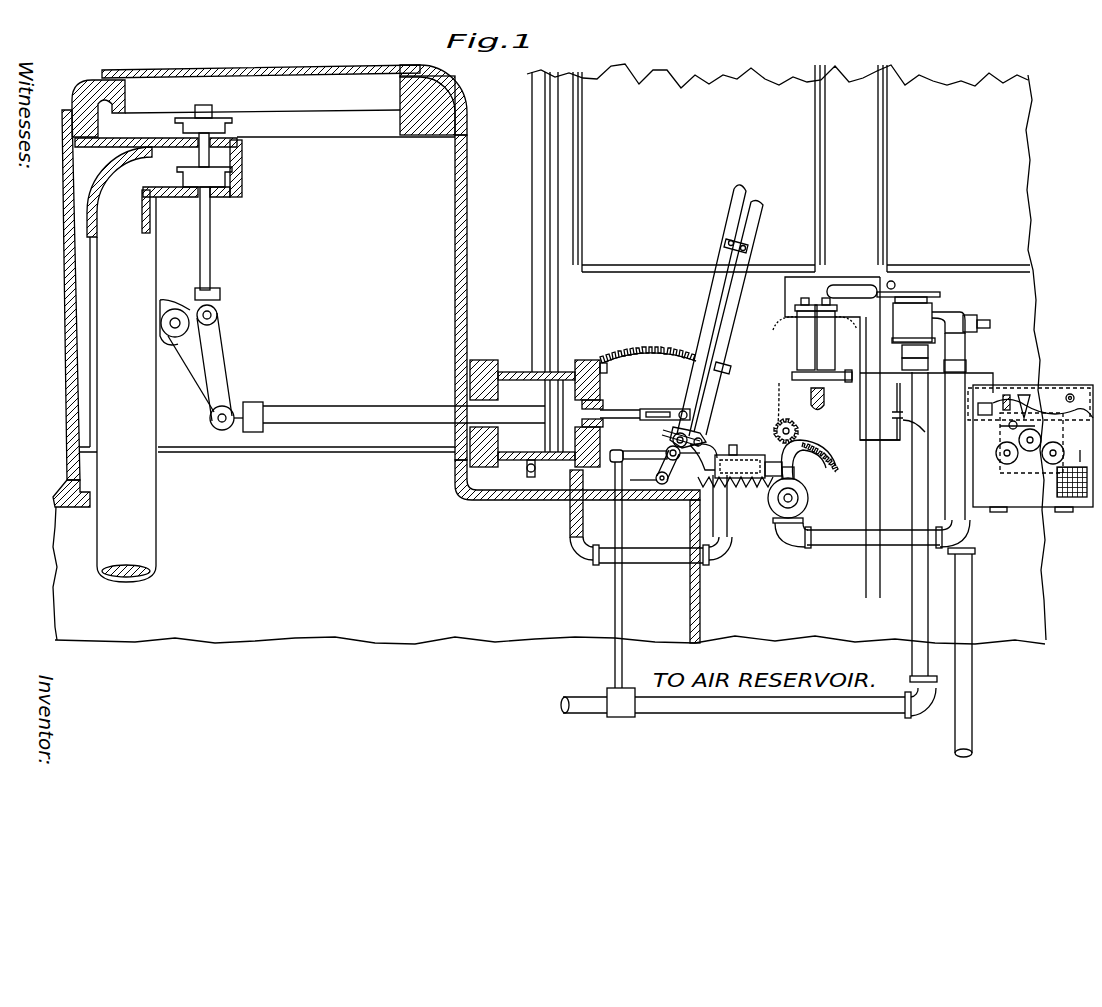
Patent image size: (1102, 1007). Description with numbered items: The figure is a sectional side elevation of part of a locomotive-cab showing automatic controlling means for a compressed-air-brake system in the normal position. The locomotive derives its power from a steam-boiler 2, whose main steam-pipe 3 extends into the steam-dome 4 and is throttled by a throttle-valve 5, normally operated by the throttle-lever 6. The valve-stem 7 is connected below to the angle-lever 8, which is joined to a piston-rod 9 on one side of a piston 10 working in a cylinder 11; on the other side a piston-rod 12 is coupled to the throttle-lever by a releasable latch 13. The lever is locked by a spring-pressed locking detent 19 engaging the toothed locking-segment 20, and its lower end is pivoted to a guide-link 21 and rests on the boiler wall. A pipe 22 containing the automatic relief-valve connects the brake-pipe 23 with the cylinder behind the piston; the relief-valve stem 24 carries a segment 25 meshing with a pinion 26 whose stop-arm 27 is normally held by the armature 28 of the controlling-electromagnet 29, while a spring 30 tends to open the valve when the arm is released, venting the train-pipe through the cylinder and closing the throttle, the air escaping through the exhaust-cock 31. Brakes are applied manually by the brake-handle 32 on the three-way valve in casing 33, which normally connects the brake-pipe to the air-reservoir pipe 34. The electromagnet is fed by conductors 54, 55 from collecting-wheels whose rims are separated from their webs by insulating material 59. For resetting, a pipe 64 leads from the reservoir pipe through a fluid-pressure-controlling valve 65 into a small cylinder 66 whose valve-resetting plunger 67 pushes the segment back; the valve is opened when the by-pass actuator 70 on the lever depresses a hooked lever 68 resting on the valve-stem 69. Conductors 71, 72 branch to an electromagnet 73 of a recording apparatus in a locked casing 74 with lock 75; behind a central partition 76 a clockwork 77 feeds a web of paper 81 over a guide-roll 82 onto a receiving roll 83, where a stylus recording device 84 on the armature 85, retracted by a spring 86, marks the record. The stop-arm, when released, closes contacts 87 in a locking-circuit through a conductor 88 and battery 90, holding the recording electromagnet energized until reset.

The steam-boiler 2 is at (549, 545).
The main steam-pipe 3 is at (121, 364).
The steam-dome 4 is at (376, 286).
The throttle-valve 5 is at (220, 182).
The throttle-lever 6 is at (714, 368).
The valve-stem 7 is at (212, 266).
The angle-lever 8 is at (213, 383).
The piston-rod 9 is at (348, 405).
The piston 10 is at (559, 383).
The cylinder 11 is at (517, 380).
The piston-rod 12 is at (615, 408).
The latch 13 is at (681, 412).
The locking detent 19 is at (720, 262).
The toothed locking-segment 20 is at (645, 351).
The guide-link 21 is at (652, 492).
The pipe 22 is at (848, 547).
The brake-pipe 23 is at (976, 580).
The relief-valve stem 24 is at (808, 498).
The segment 25 is at (806, 470).
The pinion 26 is at (782, 422).
The stop-arm 27 is at (776, 424).
The armature 28 is at (792, 377).
The controlling-electromagnet 29 is at (803, 348).
The spring 30 is at (755, 488).
The exhaust-cock 31 is at (528, 480).
The brake-handle 32 is at (861, 301).
The casing 33 is at (933, 331).
The pipe 34 is at (913, 497).
The conductor 54 is at (882, 590).
The conductor 55 is at (866, 583).
The insulating material 59 is at (838, 469).
The pipe 64 is at (624, 613).
The fluid-pressure-controlling valve 65 is at (658, 473).
The small cylinder 66 is at (733, 455).
The valve-resetting plunger 67 is at (771, 460).
The hooked lever 68 is at (664, 434).
The valve-stem 69 is at (701, 438).
The by-pass actuator 70 is at (632, 449).
The conductor 71 is at (968, 373).
The conductor 72 is at (938, 377).
The electromagnet 73 is at (987, 400).
The locked casing 74 is at (1035, 446).
The lock 75 is at (1070, 393).
The central partition 76 is at (1082, 455).
The clockwork 77 is at (1064, 512).
The web of paper 81 is at (1007, 465).
The guide-roll 82 is at (1030, 452).
The receiving roll 83 is at (1053, 465).
The recording device 84 is at (1030, 394).
The armature 85 is at (1010, 397).
The spring 86 is at (1015, 436).
The contacts 87 is at (870, 440).
The conductor 88 is at (895, 446).
The battery 90 is at (926, 431).